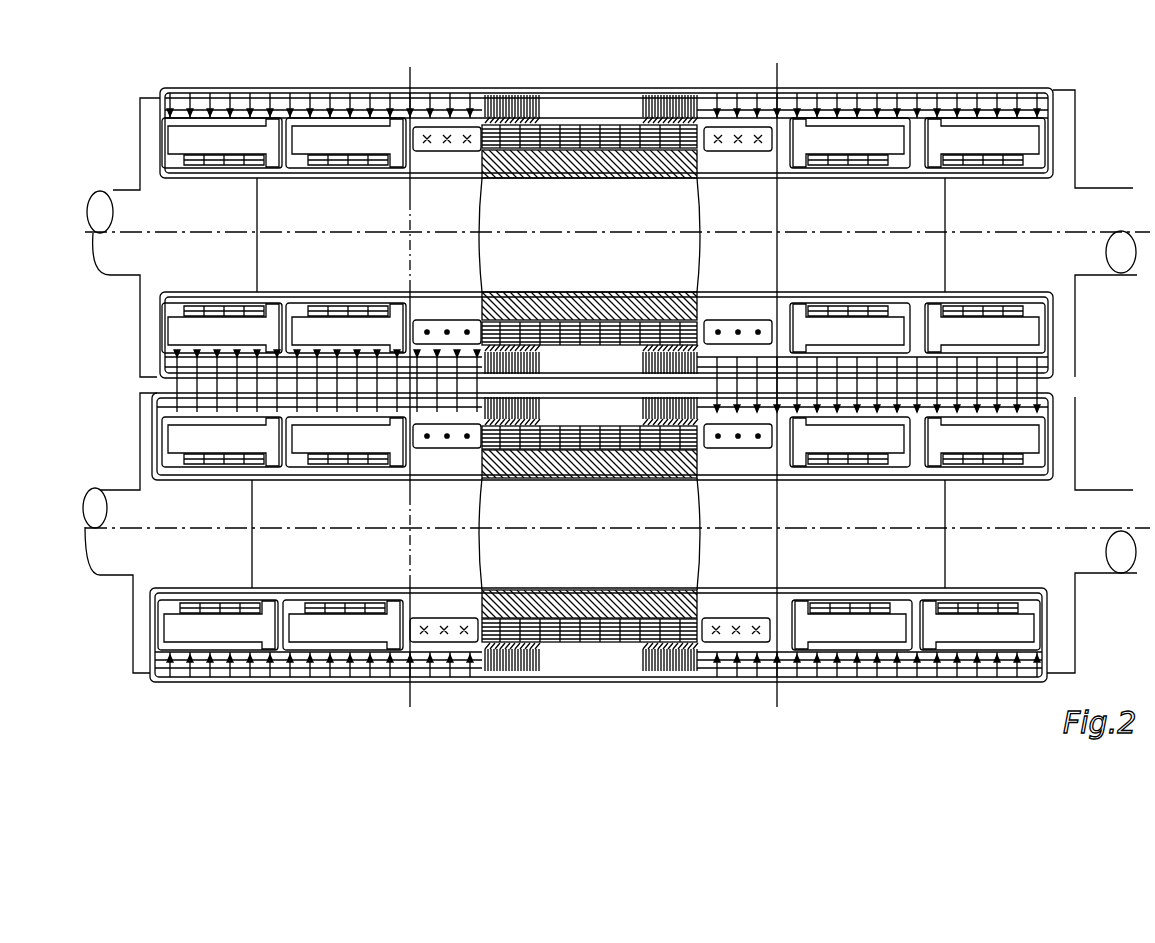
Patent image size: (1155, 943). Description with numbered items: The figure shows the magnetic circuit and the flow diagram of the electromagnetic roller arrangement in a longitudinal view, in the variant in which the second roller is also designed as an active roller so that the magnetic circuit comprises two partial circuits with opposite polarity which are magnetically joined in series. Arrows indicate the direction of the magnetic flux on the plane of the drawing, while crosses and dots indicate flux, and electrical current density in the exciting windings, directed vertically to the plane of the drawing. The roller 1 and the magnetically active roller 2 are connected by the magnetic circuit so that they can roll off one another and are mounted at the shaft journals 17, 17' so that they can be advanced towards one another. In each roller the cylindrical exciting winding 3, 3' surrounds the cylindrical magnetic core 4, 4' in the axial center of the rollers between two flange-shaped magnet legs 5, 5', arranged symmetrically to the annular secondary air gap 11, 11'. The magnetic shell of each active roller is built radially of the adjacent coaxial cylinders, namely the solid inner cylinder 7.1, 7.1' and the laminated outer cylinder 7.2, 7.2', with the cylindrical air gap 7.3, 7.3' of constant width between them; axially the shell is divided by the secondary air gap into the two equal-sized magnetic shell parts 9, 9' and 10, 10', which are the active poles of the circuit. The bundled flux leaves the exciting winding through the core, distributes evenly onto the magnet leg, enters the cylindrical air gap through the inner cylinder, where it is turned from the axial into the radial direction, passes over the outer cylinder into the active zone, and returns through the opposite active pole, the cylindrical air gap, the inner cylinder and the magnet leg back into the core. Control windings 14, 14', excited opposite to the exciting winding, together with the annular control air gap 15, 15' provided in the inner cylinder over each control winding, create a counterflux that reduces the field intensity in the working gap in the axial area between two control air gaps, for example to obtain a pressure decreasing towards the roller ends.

The magnetically passive roller 1 is at (197, 90).
The magnetically active roller 2 is at (198, 683).
The cylindrical exciting winding 3 is at (587, 583).
The cylindrical exciting winding 3' is at (587, 282).
The cylindrical magnetic core 4 is at (589, 593).
The cylindrical magnetic core 4' is at (589, 293).
The flange-shaped magnet leg 5 is at (280, 596).
The flange-shaped magnet leg 5' is at (284, 298).
The inner cylinder 7.1 is at (467, 534).
The inner cylinder 7.1' is at (469, 235).
The outer cylinder 7.2 is at (444, 602).
The outer cylinder 7.2' is at (447, 301).
The cylindrical air gap 7.3 is at (482, 605).
The cylindrical air gap 7.3' is at (485, 305).
The magnetic shell part 9 is at (626, 534).
The magnetic shell part 9' is at (670, 235).
The magnetic shell part 10 is at (587, 484).
The magnetic shell part 10' is at (587, 184).
The annular secondary air gap 11 is at (589, 462).
The annular secondary air gap 11' is at (589, 175).
The control winding 14 is at (275, 596).
The control winding 14' is at (282, 298).
The annular control air gap 15 is at (282, 598).
The annular control air gap 15' is at (286, 282).
The shaft journal 17 is at (1092, 535).
The shaft journal 17' is at (1096, 233).